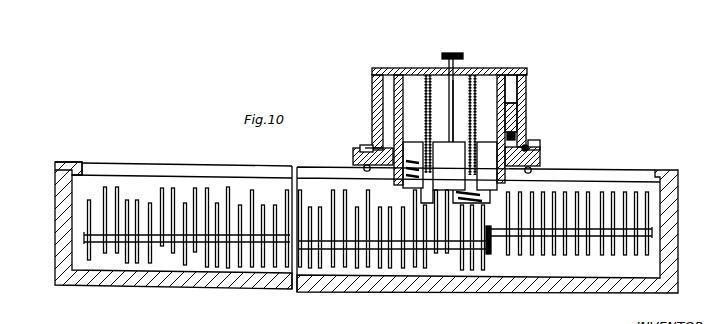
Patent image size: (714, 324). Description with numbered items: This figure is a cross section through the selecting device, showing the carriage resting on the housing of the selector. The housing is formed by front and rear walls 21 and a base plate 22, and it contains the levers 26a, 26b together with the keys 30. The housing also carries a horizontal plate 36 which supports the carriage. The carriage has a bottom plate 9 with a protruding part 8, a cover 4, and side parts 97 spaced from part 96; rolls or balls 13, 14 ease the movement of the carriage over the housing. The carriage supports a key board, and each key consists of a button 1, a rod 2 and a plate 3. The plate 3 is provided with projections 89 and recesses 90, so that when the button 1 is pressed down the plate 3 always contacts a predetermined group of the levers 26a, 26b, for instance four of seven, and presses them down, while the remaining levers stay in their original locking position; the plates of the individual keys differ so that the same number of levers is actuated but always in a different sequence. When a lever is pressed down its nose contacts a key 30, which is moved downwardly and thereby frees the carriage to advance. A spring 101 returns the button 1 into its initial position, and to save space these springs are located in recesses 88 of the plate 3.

The button 1 is at (451, 52).
The rod 2 is at (454, 82).
The plate 3 is at (474, 73).
The cover 4 is at (519, 66).
The protruding part 8 is at (516, 128).
The bottom plate 9 is at (531, 142).
The roll or ball 13 is at (363, 168).
The roll or ball 14 is at (357, 151).
The front and rear walls 21 is at (58, 218).
The base plate 22 is at (375, 286).
The lever 26a is at (157, 190).
The lever 26b is at (233, 200).
The key 30 is at (200, 248).
The horizontal plate 36 is at (68, 163).
The recess 88 is at (424, 158).
The projection 89 is at (428, 198).
The recess 90 is at (445, 197).
The part 96 is at (526, 93).
The side part 97 is at (526, 103).
The spring 101 is at (468, 102).